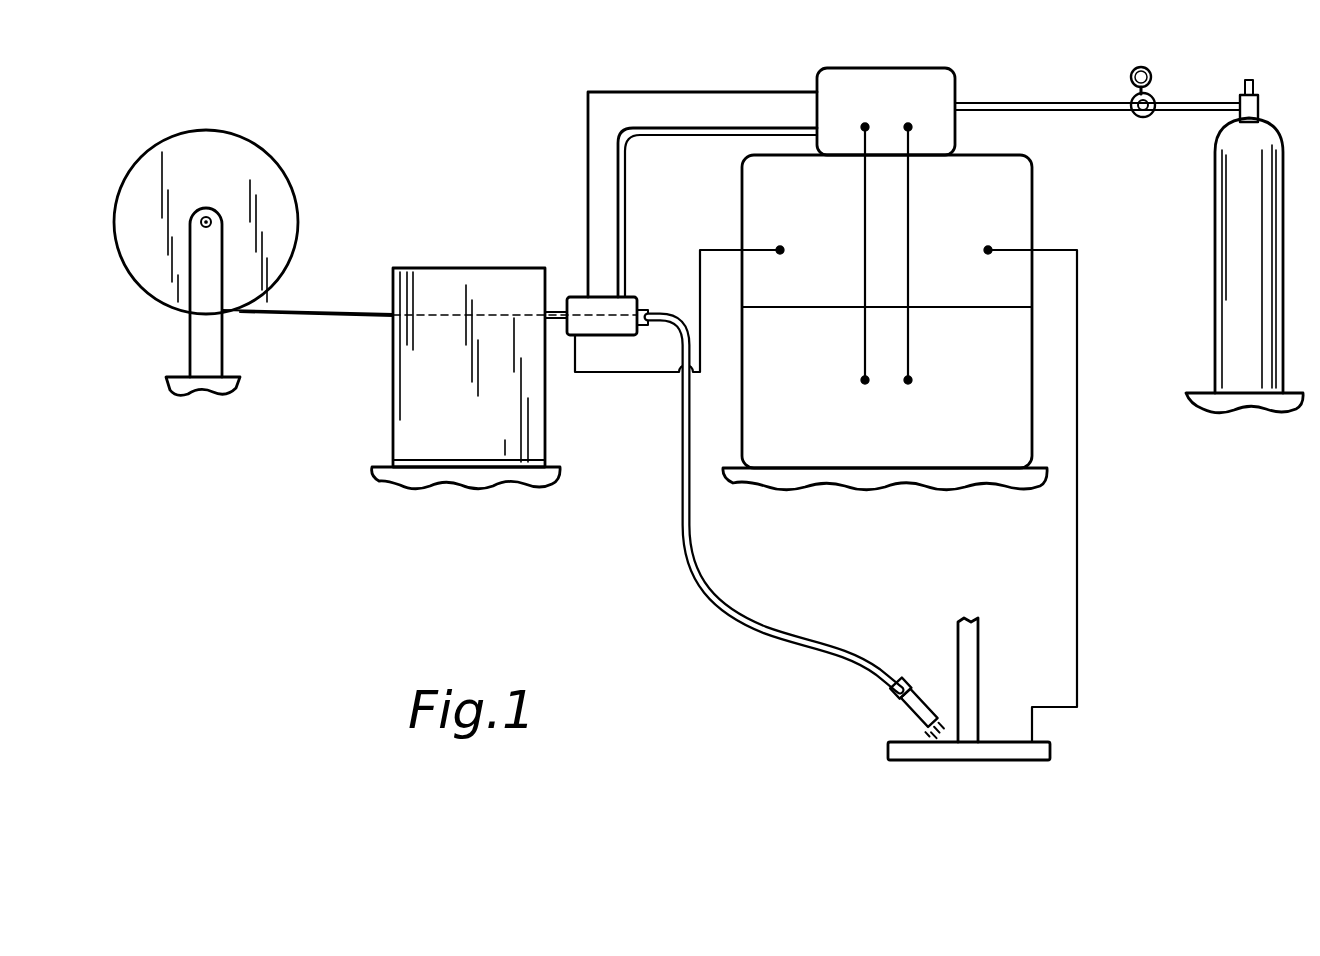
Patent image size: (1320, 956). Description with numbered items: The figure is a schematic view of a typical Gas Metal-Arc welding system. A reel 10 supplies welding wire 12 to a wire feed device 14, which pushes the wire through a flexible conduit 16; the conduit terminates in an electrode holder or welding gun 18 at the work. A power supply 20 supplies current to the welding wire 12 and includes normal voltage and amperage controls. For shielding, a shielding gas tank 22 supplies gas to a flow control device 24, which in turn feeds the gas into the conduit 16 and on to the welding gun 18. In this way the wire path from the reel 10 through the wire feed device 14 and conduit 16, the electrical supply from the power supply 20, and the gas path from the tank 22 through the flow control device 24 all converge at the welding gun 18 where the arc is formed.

The reel 10 is at (248, 165).
The welding wire 12 is at (300, 318).
The wire feed device 14 is at (466, 280).
The flexible conduit 16 is at (681, 443).
The welding gun 18 is at (905, 698).
The power supply 20 is at (1018, 193).
The shielding gas tank 22 is at (1228, 218).
The flow control device 24 is at (895, 82).